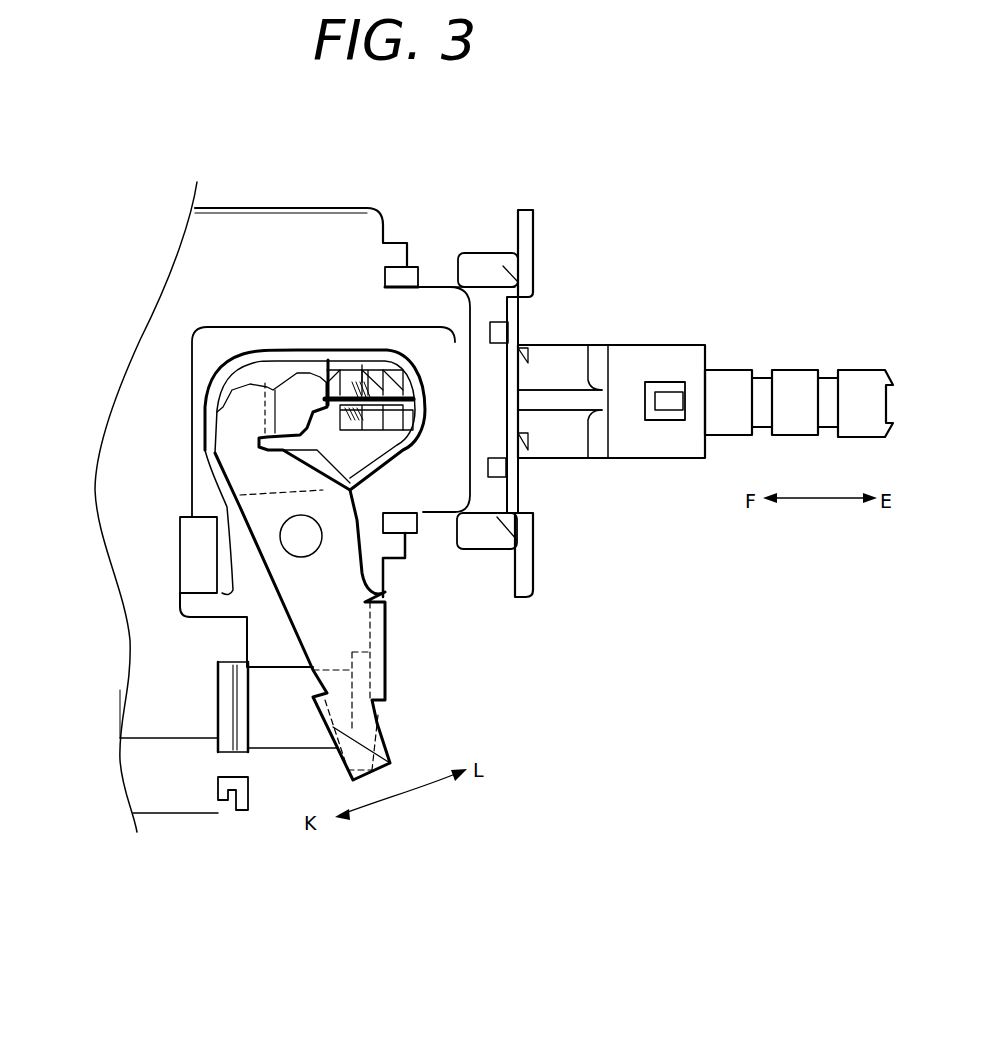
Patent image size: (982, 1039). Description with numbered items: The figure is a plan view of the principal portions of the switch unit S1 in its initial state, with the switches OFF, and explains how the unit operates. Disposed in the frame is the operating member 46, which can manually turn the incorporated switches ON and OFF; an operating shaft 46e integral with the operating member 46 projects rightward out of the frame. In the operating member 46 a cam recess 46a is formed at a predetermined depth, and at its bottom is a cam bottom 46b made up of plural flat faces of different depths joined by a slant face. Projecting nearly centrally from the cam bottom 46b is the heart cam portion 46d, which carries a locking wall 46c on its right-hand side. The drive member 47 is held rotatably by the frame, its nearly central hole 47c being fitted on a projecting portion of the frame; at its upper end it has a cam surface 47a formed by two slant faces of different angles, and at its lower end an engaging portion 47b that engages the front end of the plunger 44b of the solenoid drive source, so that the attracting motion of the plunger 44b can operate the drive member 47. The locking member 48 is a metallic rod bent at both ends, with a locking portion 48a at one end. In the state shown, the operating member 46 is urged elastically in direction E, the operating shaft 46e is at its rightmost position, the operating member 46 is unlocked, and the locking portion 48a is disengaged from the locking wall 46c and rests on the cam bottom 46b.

The switch unit S1 is at (250, 234).
The plunger 44b is at (280, 727).
The operating member 46 is at (565, 347).
The cam recess 46a is at (367, 448).
The cam bottom 46b is at (343, 420).
The locking wall 46c is at (413, 412).
The heart cam portion 46d is at (362, 365).
The operating shaft 46e is at (722, 380).
The drive member 47 is at (392, 652).
The cam surface 47a is at (303, 412).
The engaging portion 47b is at (333, 758).
The hole 47c is at (300, 536).
The locking member 48 is at (397, 396).
The locking portion 48a is at (327, 370).